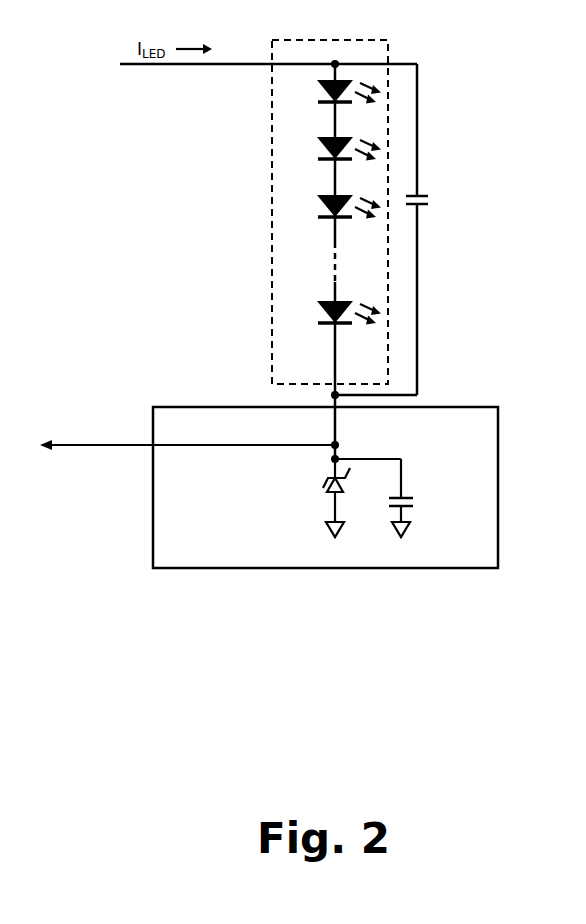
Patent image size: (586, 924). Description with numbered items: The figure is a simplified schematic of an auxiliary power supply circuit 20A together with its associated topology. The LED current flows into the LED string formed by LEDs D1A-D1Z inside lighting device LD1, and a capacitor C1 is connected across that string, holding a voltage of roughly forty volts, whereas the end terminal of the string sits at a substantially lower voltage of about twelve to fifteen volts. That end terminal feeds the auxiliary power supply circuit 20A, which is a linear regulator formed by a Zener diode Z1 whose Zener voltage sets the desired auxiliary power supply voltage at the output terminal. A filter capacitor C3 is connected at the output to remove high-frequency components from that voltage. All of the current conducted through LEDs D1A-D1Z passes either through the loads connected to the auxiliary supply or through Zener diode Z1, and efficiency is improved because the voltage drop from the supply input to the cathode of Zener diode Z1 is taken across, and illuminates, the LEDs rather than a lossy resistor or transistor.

The auxiliary power supply circuit 20A is at (204, 556).
The lighting device LD1 is at (330, 249).
The LED D1A is at (334, 104).
The LED D1Z is at (352, 282).
The capacitor C1 is at (395, 229).
The Zener diode Z1 is at (350, 498).
The filter capacitor C3 is at (393, 498).